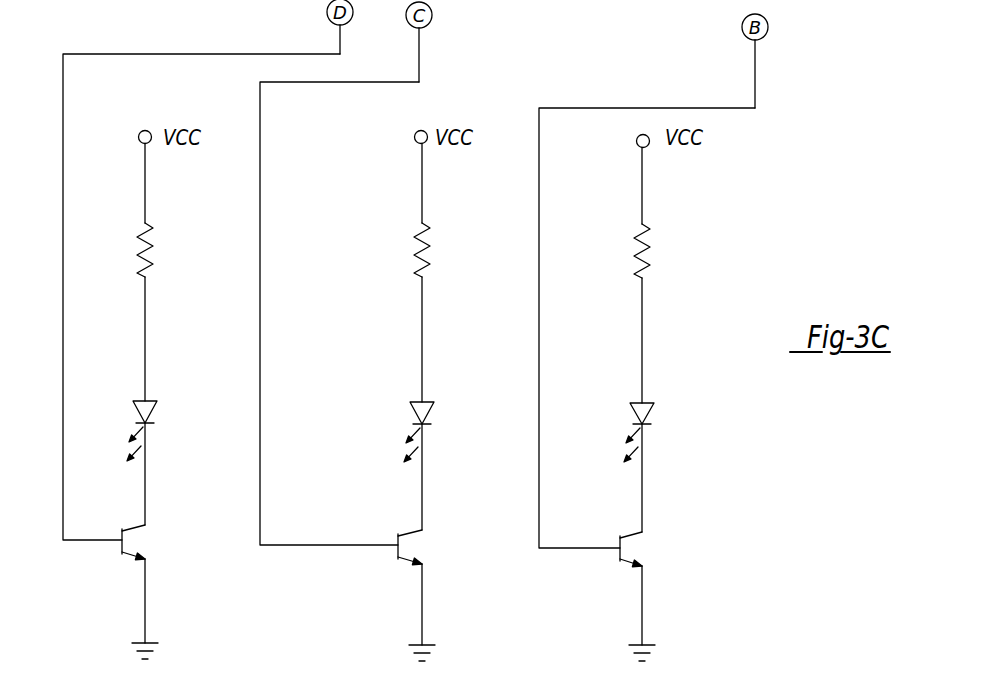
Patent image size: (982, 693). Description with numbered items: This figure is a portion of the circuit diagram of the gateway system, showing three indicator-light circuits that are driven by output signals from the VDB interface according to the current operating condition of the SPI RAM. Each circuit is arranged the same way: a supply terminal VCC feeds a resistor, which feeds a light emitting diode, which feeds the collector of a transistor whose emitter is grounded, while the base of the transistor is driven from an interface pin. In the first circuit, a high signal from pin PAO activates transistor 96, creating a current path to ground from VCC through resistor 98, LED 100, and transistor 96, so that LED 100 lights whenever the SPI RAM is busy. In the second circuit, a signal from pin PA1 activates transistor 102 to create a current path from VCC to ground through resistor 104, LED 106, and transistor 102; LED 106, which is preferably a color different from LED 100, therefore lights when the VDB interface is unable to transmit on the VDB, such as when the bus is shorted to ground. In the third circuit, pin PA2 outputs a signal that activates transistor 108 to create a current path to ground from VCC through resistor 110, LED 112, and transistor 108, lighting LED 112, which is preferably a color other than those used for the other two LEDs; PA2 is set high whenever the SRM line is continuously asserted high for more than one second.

The transistor 96 is at (640, 540).
The resistor 98 is at (647, 245).
The LED 100 is at (652, 402).
The transistor 102 is at (415, 537).
The resistor 104 is at (430, 250).
The LED 106 is at (430, 418).
The transistor 108 is at (140, 537).
The resistor 110 is at (155, 410).
The LED 112 is at (153, 245).